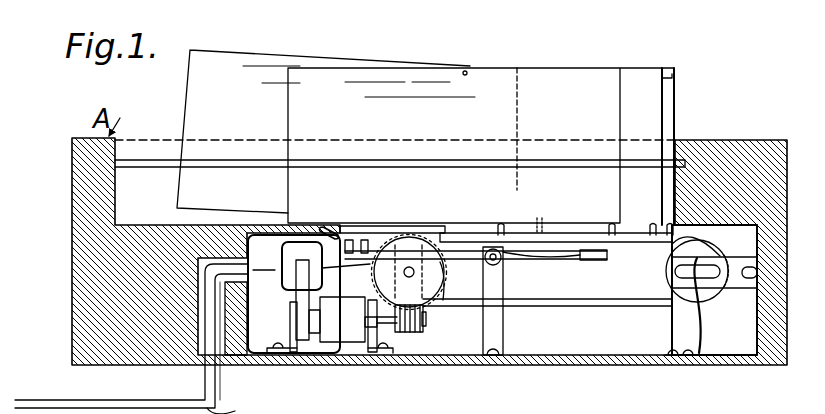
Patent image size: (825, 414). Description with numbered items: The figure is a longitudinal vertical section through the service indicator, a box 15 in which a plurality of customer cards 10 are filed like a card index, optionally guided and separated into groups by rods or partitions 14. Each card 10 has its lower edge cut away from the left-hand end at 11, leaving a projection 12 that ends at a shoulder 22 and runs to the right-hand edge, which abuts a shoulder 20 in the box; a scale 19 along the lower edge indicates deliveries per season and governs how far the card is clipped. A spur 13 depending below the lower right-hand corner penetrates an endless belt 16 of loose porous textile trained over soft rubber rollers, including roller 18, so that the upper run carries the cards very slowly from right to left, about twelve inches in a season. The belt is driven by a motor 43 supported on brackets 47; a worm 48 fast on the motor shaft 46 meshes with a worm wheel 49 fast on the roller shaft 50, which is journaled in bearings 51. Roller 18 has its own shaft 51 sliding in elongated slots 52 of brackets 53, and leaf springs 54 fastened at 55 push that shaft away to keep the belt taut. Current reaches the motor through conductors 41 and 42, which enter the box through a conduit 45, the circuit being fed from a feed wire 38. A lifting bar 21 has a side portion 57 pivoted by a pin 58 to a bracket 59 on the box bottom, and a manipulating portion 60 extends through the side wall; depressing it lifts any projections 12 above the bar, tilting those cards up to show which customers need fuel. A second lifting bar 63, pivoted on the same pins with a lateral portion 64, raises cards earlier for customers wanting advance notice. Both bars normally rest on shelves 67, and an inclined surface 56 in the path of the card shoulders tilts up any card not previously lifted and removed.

The cards 10 is at (663, 76).
The cut-away portion 11 is at (205, 212).
The projection 12 is at (552, 232).
The spur 13 is at (650, 228).
The rods or partitions 14 is at (156, 161).
The box 15 is at (708, 151).
The endless belt 16 is at (592, 235).
The roller 18 is at (704, 299).
The scale 19 is at (534, 232).
The shoulder 20 is at (672, 180).
The lifting bar 21 is at (349, 240).
The shoulder 22 is at (447, 230).
The feed wire 38 is at (236, 403).
The conductor 41 is at (205, 392).
The conductor 42 is at (218, 376).
The motor 43 is at (313, 298).
The conduit 45 is at (202, 346).
The motor shaft 46 is at (389, 326).
The brackets 47 is at (291, 322).
The worm 48 is at (413, 333).
The worm wheel 49 is at (425, 319).
The shaft 50 is at (402, 276).
The bearings; shaft 51 is at (700, 250).
The elongated slots 52 is at (675, 268).
The bearings or brackets 53 is at (723, 291).
The leaf springs 54 is at (694, 315).
The fastening 55 is at (669, 350).
The inclined surface 56 is at (322, 228).
The side portion 57 is at (441, 263).
The pin 58 is at (500, 263).
The bracket 59 is at (499, 334).
The manipulating portion 60 is at (589, 262).
The lifting bar 63 is at (366, 240).
The lateral portion 64 is at (598, 256).
The shelves 67 is at (304, 272).